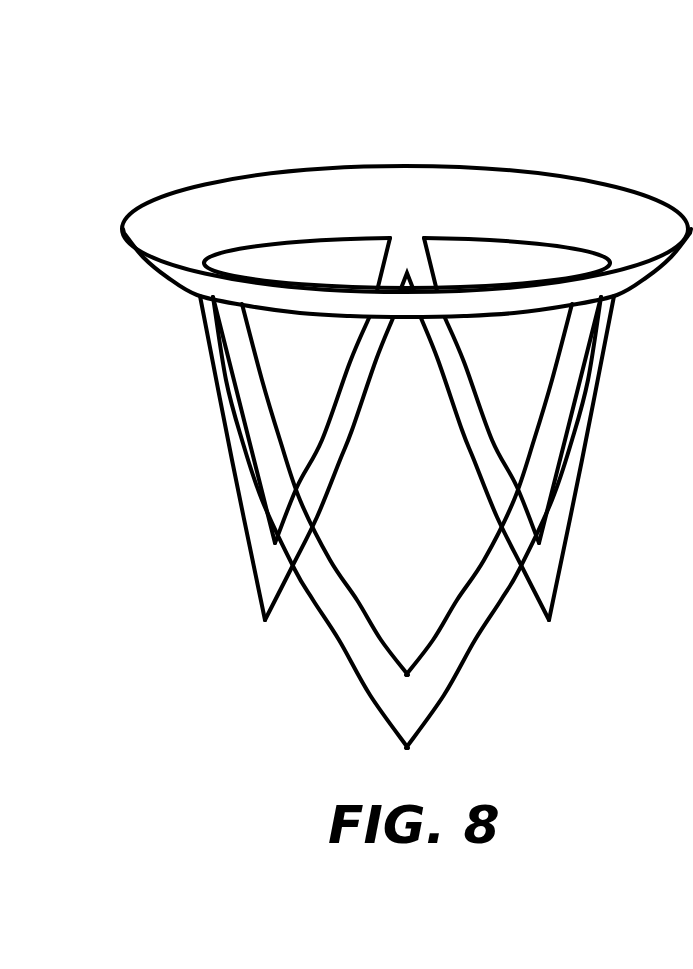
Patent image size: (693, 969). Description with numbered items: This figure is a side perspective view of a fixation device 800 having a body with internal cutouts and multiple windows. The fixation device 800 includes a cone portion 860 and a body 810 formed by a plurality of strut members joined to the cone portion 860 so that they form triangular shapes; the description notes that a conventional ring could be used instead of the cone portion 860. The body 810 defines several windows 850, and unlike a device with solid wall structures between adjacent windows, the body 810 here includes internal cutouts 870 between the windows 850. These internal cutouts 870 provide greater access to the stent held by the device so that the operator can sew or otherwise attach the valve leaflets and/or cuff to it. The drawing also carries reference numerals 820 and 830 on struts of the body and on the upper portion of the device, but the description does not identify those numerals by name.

The fixation device 800 is at (354, 397).
The body 810 is at (207, 380).
The front outer strut 820 is at (324, 664).
The ring 830 is at (500, 134).
The windows 850 is at (408, 410).
The cone portion 860 is at (123, 243).
The internal cutouts 870 is at (423, 612).